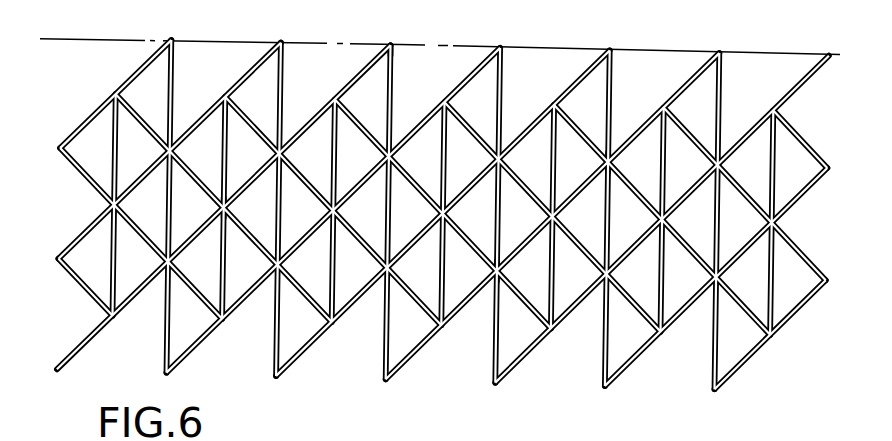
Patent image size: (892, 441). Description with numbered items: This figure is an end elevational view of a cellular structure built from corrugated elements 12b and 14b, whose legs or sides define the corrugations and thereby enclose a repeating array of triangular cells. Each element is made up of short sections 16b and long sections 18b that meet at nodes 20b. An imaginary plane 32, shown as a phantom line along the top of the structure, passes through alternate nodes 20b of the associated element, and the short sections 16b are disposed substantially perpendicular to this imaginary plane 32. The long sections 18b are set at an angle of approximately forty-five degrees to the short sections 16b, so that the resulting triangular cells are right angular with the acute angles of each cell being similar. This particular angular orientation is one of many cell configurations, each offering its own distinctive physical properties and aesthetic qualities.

The element 12b is at (136, 108).
The element 14b is at (178, 85).
The short sections 16b is at (167, 342).
The long sections 18b is at (323, 109).
The nodes 20b is at (228, 211).
The imaginary plane 32 is at (259, 38).